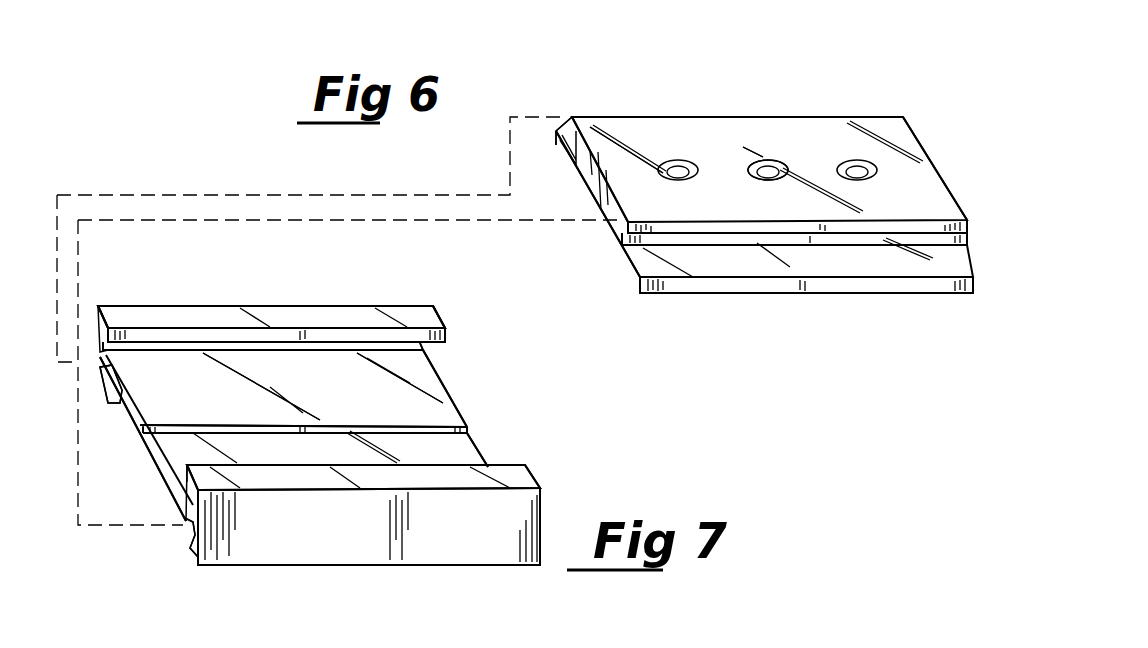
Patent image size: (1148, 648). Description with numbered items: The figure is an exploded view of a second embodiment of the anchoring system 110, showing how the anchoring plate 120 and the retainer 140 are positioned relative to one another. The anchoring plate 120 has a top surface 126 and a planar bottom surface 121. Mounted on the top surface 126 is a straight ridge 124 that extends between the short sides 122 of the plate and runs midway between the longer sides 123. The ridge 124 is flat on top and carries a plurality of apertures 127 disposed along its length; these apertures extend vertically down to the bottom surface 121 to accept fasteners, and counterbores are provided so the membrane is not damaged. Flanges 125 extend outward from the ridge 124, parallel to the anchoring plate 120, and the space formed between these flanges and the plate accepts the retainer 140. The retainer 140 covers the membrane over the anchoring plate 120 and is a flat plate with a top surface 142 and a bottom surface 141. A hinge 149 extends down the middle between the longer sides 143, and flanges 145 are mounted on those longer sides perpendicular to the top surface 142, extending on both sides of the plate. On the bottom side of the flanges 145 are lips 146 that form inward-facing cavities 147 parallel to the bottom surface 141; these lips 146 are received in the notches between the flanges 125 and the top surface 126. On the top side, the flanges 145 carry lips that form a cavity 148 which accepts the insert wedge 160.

In FIG. 6, the anchoring system 110 is at (298, 178).
In FIG. 6, the anchoring plate 120 is at (910, 113).
In FIG. 6, the bottom surface 121 is at (607, 233).
In FIG. 6, the short side 122 is at (590, 188).
In FIG. 6, the longer side 123 is at (785, 282).
In FIG. 6, the straight ridge 124 is at (733, 133).
In FIG. 6, the flange 125 is at (873, 232).
In FIG. 6, the top surface 126 is at (673, 267).
In FIG. 6, the apertures 127 is at (773, 165).
In FIG. 7, the retainer 140 is at (462, 407).
In FIG. 7, the bottom surface 141 is at (152, 463).
In FIG. 7, the top surface 142 is at (437, 391).
In FIG. 7, the longer side 143 is at (320, 511).
In FIG. 7, the flange 145 is at (458, 552).
In FIG. 7, the lip 146 is at (197, 550).
In FIG. 7, the cavity 147 is at (183, 519).
In FIG. 7, the cavity 148 is at (390, 349).
In FIG. 7, the hinge 149 is at (467, 427).
In FIG. 7, the insert wedge 160 is at (768, 647).